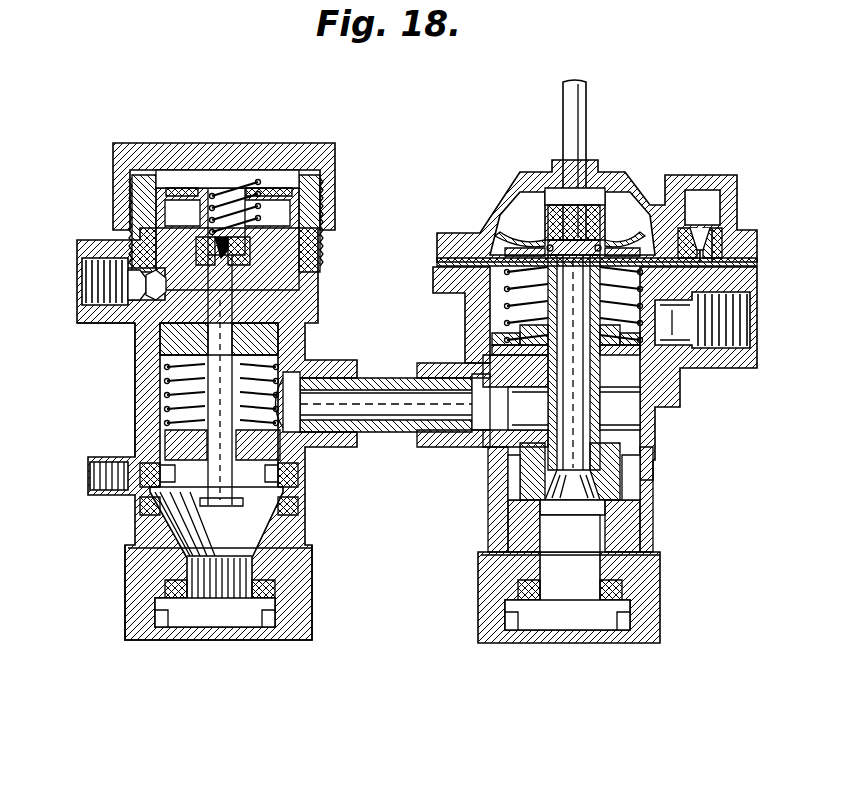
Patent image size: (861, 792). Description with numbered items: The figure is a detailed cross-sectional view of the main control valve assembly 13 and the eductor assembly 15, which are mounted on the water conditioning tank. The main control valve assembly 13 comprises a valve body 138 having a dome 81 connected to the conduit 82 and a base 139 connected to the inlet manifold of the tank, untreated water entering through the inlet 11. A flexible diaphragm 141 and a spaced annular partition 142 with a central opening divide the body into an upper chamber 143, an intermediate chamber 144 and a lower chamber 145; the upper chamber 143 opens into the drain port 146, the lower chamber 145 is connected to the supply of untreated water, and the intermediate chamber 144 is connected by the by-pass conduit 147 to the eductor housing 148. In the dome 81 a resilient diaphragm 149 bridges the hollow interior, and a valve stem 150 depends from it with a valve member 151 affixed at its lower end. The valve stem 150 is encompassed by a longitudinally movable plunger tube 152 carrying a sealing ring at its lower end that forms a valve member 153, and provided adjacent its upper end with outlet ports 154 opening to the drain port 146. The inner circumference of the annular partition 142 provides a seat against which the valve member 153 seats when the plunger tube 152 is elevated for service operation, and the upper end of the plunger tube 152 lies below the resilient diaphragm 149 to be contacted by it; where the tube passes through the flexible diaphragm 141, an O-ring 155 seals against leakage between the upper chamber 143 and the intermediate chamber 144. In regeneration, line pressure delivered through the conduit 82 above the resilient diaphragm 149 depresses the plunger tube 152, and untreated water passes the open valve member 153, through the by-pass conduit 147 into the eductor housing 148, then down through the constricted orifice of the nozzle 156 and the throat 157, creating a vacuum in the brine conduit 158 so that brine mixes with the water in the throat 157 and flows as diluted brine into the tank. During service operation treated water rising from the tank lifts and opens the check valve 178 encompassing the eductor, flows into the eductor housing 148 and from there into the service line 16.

The inlet 11 is at (642, 503).
The main control valve assembly 13 is at (676, 175).
The eductor assembly 15 is at (152, 140).
The service line 16 is at (165, 406).
The dome 81 is at (517, 195).
The conduit 82 is at (588, 117).
The valve body 138 is at (682, 403).
The base 139 is at (650, 575).
The flexible diaphragm 141 is at (505, 355).
The annular partition 142 is at (628, 446).
The upper chamber 143 is at (500, 292).
The intermediate chamber 144 is at (528, 412).
The lower chamber 145 is at (520, 472).
The drain port 146 is at (737, 333).
The by-pass conduit 147 is at (388, 433).
The eductor housing 148 is at (318, 276).
The resilient diaphragm 149 is at (492, 233).
The valve stem 150 is at (600, 310).
The valve member 151 is at (612, 515).
The plunger tube 152 is at (640, 428).
The valve member 153 is at (620, 478).
The outlet ports 154 is at (576, 308).
The O-ring 155 is at (680, 386).
The flow regulator or nozzle 156 is at (318, 232).
The throat 157 is at (218, 303).
The brine conduit 158 is at (97, 283).
The check valve 178 is at (165, 433).